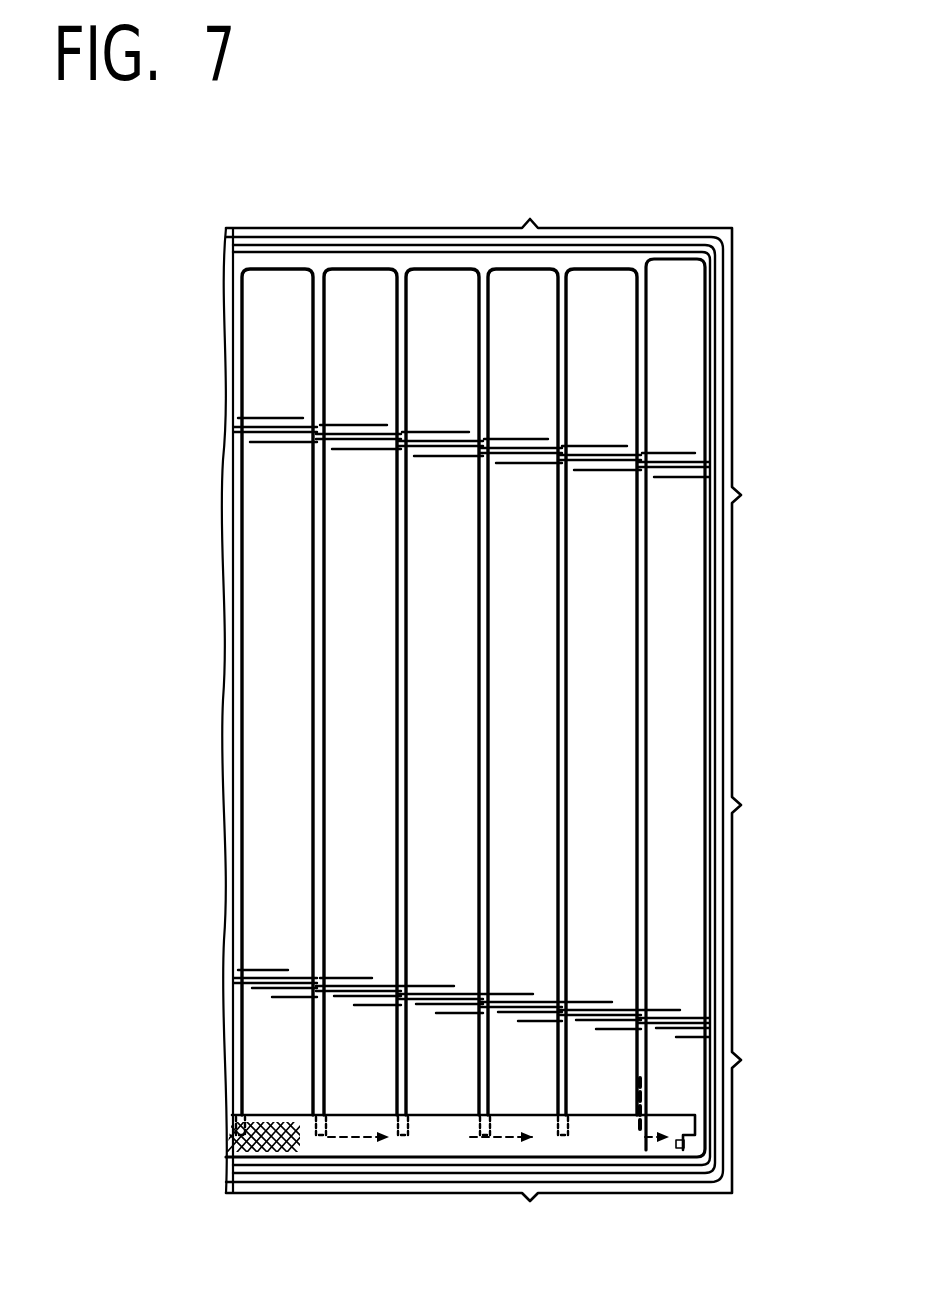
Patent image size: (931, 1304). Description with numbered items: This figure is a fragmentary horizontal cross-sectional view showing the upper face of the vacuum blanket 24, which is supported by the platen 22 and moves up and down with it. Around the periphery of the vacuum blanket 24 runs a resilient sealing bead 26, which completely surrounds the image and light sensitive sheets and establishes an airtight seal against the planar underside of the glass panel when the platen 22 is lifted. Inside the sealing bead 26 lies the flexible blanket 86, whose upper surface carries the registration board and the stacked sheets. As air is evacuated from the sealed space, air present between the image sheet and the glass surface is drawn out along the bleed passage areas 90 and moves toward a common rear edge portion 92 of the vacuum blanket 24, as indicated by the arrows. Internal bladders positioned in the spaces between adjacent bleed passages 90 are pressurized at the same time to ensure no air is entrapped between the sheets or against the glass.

The platen 22 is at (735, 762).
The vacuum blanket 24 is at (652, 704).
The resilient sealing bead 26 is at (441, 243).
The flexible blanket 86 is at (505, 745).
The bleed passage areas 90 is at (478, 950).
The common rear edge portion 92 is at (288, 1152).